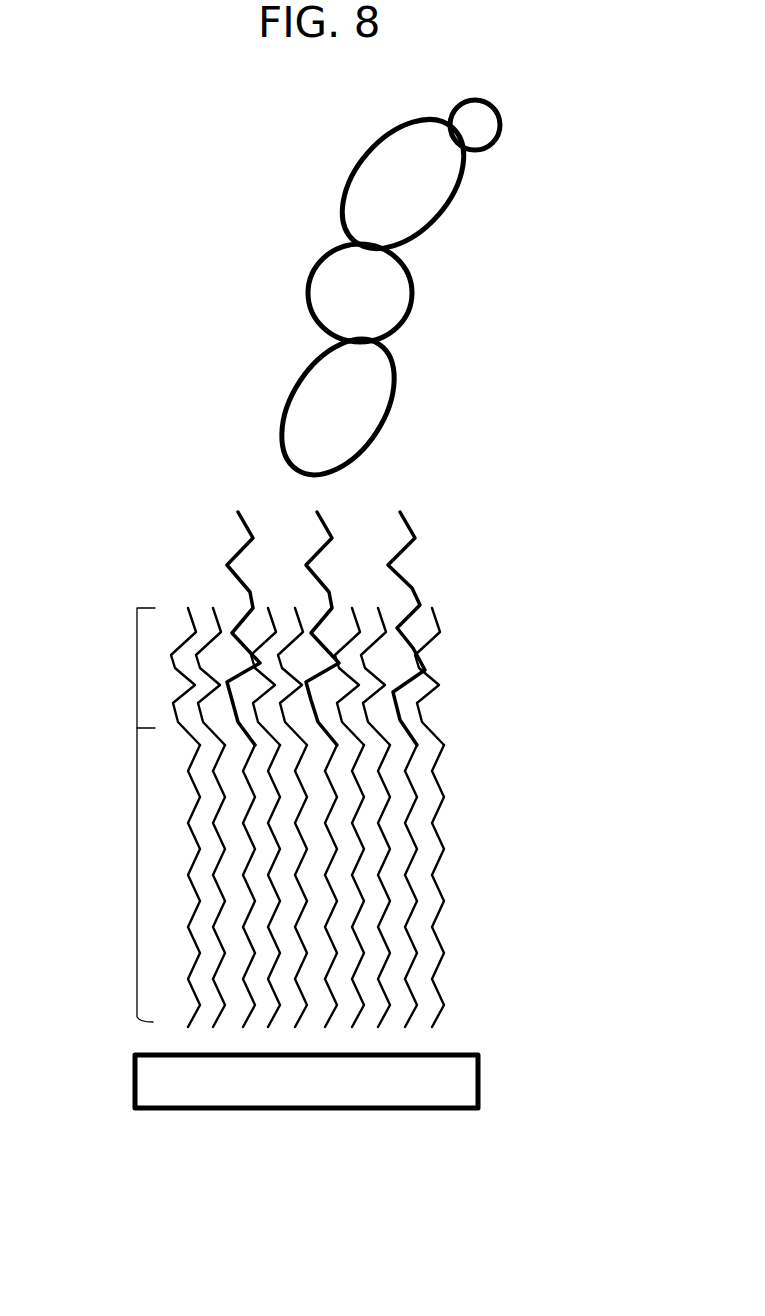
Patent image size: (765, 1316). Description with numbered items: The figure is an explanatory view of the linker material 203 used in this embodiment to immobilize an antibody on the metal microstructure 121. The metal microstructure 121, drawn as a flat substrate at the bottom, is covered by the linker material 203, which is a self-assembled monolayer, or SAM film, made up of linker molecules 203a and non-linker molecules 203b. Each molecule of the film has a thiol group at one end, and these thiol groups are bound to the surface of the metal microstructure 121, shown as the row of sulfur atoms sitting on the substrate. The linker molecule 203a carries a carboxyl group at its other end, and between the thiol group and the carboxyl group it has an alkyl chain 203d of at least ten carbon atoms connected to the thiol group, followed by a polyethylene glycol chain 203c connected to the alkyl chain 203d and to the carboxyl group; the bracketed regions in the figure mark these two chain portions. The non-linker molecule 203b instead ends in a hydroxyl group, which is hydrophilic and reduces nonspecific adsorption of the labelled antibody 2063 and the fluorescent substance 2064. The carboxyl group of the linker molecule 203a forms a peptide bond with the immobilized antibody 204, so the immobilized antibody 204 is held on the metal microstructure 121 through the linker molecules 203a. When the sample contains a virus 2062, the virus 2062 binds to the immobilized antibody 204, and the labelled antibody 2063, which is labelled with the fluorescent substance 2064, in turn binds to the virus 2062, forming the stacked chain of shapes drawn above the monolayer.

The metal microstructure 121 is at (420, 1110).
The linker material 203 is at (513, 637).
The linker molecule 203a is at (233, 428).
The non-linker molecule 203b is at (178, 560).
The polyethylene glycol chain 203c is at (136, 668).
The alkyl chain 203d is at (136, 874).
The immobilized antibody 204 is at (396, 380).
The virus 2062 is at (412, 290).
The labelled antibody 2063 is at (447, 200).
The fluorescent substance 2064 is at (499, 111).